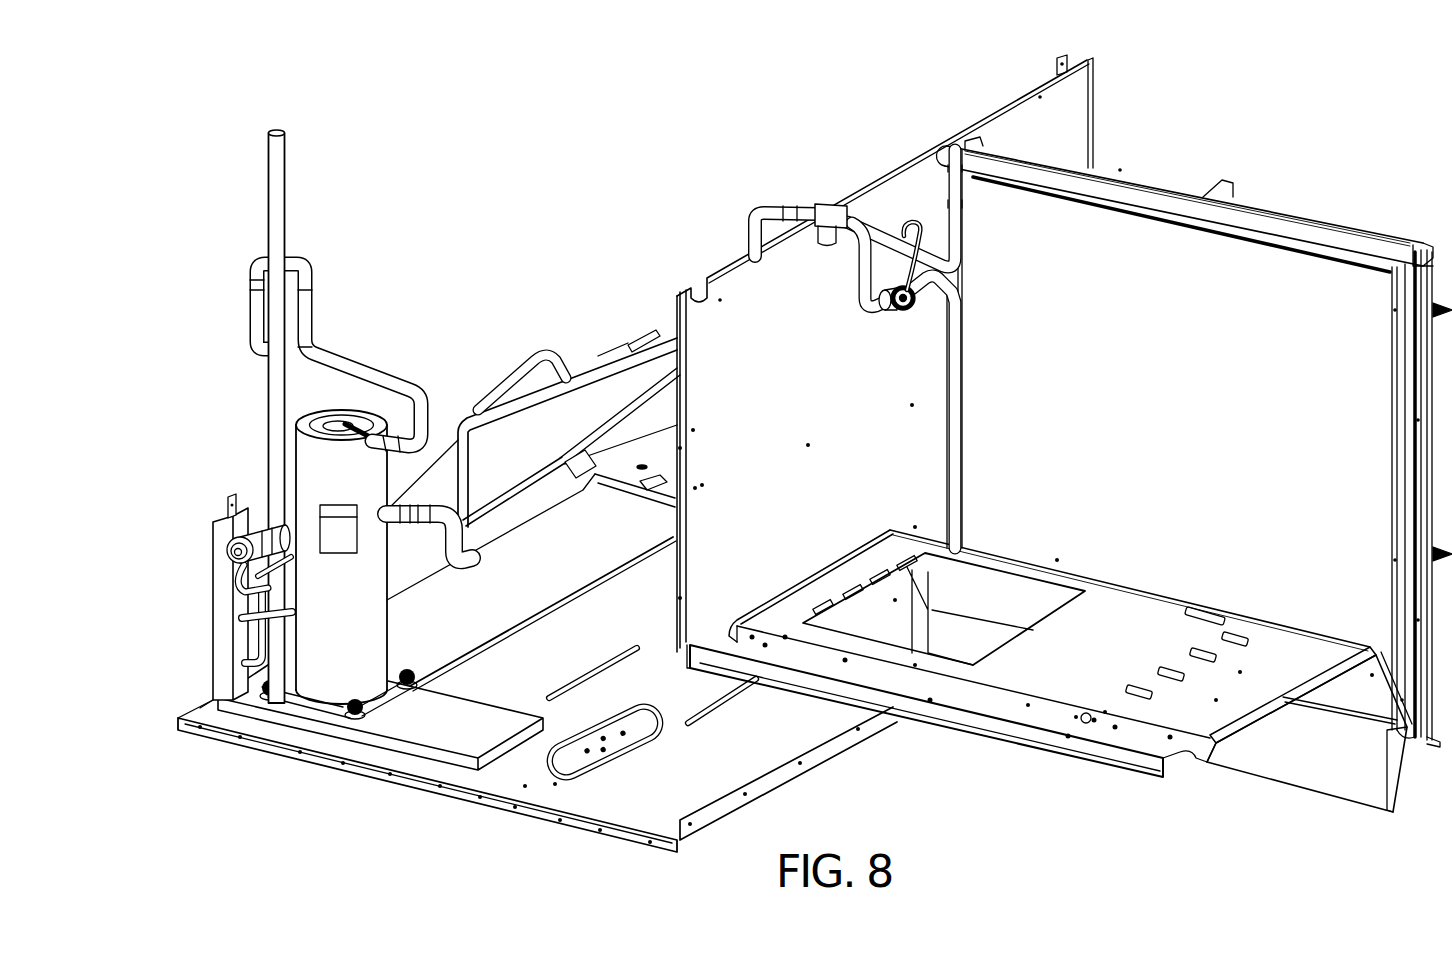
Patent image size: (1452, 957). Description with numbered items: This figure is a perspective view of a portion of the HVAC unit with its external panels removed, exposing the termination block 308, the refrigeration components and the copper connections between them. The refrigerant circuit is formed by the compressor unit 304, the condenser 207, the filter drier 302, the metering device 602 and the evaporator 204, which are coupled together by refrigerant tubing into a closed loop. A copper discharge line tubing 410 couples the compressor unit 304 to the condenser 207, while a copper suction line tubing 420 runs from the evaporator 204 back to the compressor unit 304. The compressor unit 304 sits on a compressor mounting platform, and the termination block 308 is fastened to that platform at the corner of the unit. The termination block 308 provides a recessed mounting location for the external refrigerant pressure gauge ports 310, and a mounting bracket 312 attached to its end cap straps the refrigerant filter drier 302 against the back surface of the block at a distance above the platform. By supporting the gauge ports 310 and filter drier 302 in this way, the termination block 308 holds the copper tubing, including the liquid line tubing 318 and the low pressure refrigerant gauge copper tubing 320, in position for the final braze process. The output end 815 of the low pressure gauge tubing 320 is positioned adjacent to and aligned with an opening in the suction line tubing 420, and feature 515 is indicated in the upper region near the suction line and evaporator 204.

The evaporator 204 is at (1278, 347).
The condenser 207 is at (303, 157).
The filter drier 302 is at (264, 512).
The compressor unit 304 is at (330, 668).
The termination block 308 is at (222, 551).
The refrigerant pressure gauge ports 310 is at (207, 619).
The mounting bracket 312 is at (228, 513).
The liquid line tubing 318 is at (555, 470).
The low pressure refrigerant gauge copper tubing 320 is at (503, 392).
The discharge line tubing 410 is at (312, 268).
The suction line tubing 420 is at (587, 372).
The pipe assembly 515 is at (818, 203).
The metering device 602 is at (912, 304).
The output end 815 is at (569, 366).